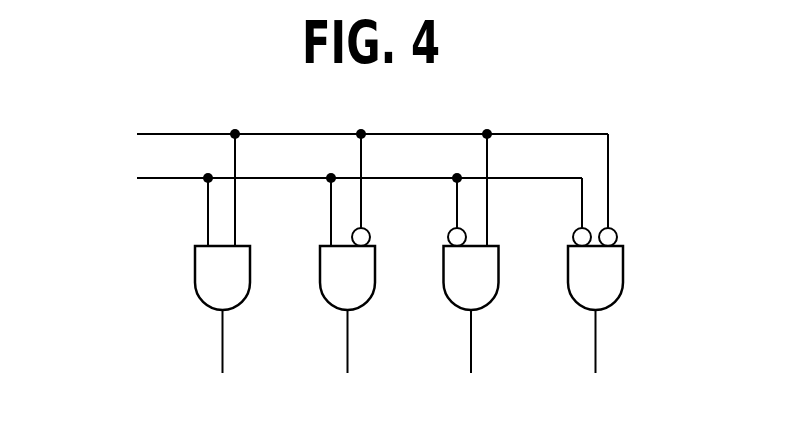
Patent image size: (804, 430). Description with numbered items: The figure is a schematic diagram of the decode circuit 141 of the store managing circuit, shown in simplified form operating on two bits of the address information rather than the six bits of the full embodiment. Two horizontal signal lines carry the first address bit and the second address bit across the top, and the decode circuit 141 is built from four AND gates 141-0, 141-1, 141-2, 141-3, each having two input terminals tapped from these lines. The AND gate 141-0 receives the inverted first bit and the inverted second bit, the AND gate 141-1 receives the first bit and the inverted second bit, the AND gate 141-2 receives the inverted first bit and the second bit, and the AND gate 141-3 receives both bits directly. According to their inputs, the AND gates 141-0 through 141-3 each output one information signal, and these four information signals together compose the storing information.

The decode circuit 141 is at (607, 102).
The AND gate 141-0 is at (579, 308).
The AND gate 141-1 is at (458, 308).
The AND gate 141-2 is at (334, 309).
The AND gate 141-3 is at (210, 309).